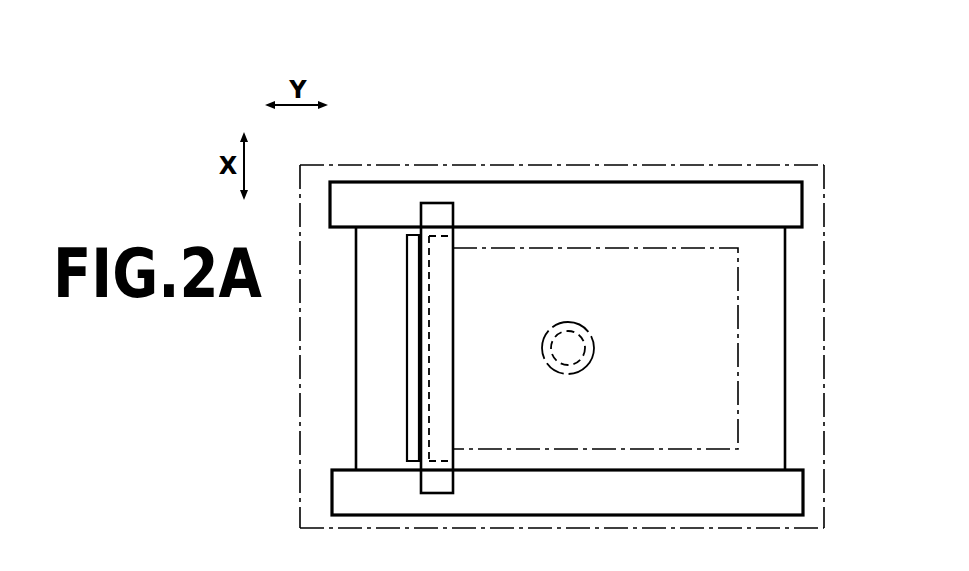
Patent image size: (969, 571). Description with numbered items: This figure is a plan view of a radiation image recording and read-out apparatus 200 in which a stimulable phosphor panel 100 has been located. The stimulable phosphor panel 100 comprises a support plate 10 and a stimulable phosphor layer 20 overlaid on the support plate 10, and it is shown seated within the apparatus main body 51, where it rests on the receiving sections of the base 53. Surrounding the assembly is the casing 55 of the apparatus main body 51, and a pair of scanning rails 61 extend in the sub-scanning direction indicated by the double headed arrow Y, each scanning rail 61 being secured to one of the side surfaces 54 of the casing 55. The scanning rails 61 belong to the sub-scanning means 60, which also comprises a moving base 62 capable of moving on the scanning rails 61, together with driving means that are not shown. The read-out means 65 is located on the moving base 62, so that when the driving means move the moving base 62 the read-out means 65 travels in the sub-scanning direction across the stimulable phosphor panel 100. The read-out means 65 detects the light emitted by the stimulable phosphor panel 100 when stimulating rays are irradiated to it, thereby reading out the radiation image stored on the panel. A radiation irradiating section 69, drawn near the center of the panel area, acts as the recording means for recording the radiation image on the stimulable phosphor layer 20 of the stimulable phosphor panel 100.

The radiation image recording and read-out apparatus 200 is at (772, 38).
The apparatus main body 51 is at (735, 121).
The side surface 54 is at (632, 163).
The casing 55 is at (832, 273).
The scanning rail 61 is at (397, 195).
The moving base 62 is at (437, 487).
The read-out means 65 is at (406, 358).
The radiation irradiating section 69 is at (580, 318).
The base 53 is at (768, 307).
The stimulable phosphor layer 20 is at (727, 326).
The support plate 10 is at (760, 375).
The stimulable phosphor panel 100 is at (748, 425).
The sub-scanning means 60 is at (570, 399).